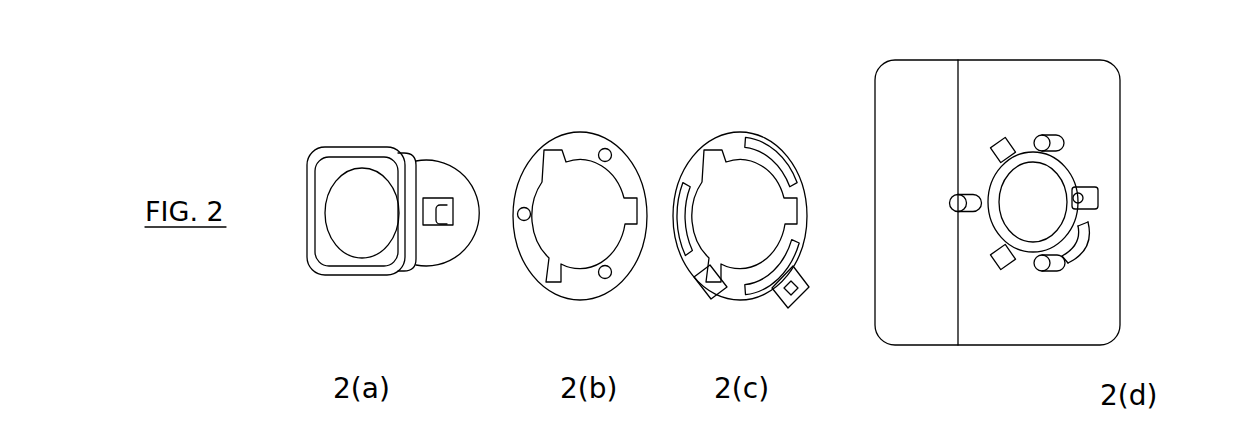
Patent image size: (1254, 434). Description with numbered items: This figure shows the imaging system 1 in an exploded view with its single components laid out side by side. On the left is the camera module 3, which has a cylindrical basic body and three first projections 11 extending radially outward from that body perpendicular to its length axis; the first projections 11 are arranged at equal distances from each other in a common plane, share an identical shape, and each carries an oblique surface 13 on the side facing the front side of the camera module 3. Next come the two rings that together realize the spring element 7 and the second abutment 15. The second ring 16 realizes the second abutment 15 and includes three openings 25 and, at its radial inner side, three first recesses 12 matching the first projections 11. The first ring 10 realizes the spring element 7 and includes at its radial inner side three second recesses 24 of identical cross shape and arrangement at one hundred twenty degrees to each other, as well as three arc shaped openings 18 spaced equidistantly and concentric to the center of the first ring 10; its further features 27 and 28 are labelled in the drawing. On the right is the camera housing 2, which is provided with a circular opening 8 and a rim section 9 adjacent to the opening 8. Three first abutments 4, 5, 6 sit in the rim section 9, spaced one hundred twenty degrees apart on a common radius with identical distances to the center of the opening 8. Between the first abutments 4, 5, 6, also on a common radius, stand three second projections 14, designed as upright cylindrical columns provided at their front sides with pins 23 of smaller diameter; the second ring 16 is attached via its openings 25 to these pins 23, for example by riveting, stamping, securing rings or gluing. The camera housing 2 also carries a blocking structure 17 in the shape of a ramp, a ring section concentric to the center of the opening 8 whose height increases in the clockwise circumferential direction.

The imaging system 1 is at (436, 88).
The camera housing 2 is at (1108, 148).
The camera module 3 is at (307, 184).
The first abutment 4 is at (1002, 146).
The first abutment 5 is at (1000, 260).
The first abutment 6 is at (1093, 195).
The spring element 7 is at (730, 148).
The opening 8 is at (1048, 222).
The rim section 9 is at (1068, 158).
The first ring 10 is at (744, 216).
The first projection 11 is at (445, 219).
The first recess 12 is at (560, 262).
The oblique surface 13 is at (418, 206).
The second projection 14 is at (1052, 148).
The second abutment 15 is at (588, 147).
The second ring 16 is at (605, 155).
The blocking structure 17 is at (1080, 236).
The arc shaped opening 18 is at (760, 274).
The pin 23 is at (1058, 245).
The second recess 24 is at (703, 272).
The opening 25 is at (602, 268).
The tab 27 is at (727, 286).
The tab with hole 28 is at (780, 308).